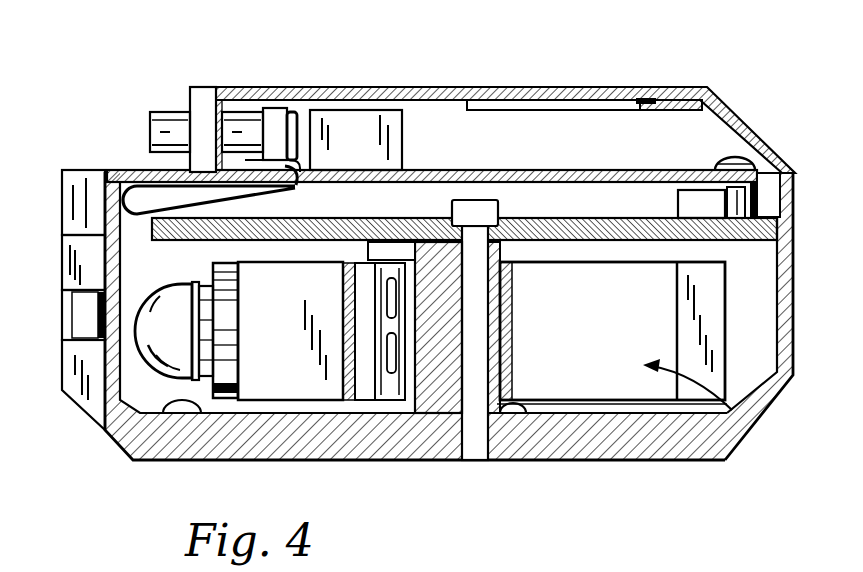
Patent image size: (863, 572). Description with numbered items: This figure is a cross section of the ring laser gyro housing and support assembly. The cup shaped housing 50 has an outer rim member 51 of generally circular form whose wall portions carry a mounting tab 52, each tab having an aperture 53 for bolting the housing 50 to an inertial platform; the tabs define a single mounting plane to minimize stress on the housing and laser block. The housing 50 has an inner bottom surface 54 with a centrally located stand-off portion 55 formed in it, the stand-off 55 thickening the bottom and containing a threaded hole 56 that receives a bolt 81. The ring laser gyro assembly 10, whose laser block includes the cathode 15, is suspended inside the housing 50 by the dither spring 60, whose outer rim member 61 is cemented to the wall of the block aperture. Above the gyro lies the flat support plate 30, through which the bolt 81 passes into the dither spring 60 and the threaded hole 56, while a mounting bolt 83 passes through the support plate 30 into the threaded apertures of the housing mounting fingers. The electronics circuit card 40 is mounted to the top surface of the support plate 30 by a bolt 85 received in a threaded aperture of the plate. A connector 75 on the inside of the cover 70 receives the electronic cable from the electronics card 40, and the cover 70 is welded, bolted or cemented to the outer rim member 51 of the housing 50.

The ring laser gyro assembly 10 is at (738, 412).
The cathode 15 is at (182, 339).
The support plate 30 is at (780, 219).
The electronics circuit card 40 is at (762, 176).
The cup shaped housing 50 is at (694, 461).
The outer rim member 51 is at (794, 284).
The mounting tab 52 is at (62, 303).
The aperture 53 is at (80, 343).
The inner bottom surface 54 is at (200, 423).
The stand-off portion 55 is at (515, 404).
The threaded hole 56 is at (477, 452).
The dither spring 60 is at (540, 304).
The outer rim member 61 is at (343, 292).
The cover 70 is at (367, 87).
The connector 75 is at (164, 112).
The bolt 81 is at (500, 210).
The mounting bolt 83 is at (678, 199).
The bolt 85 is at (738, 157).